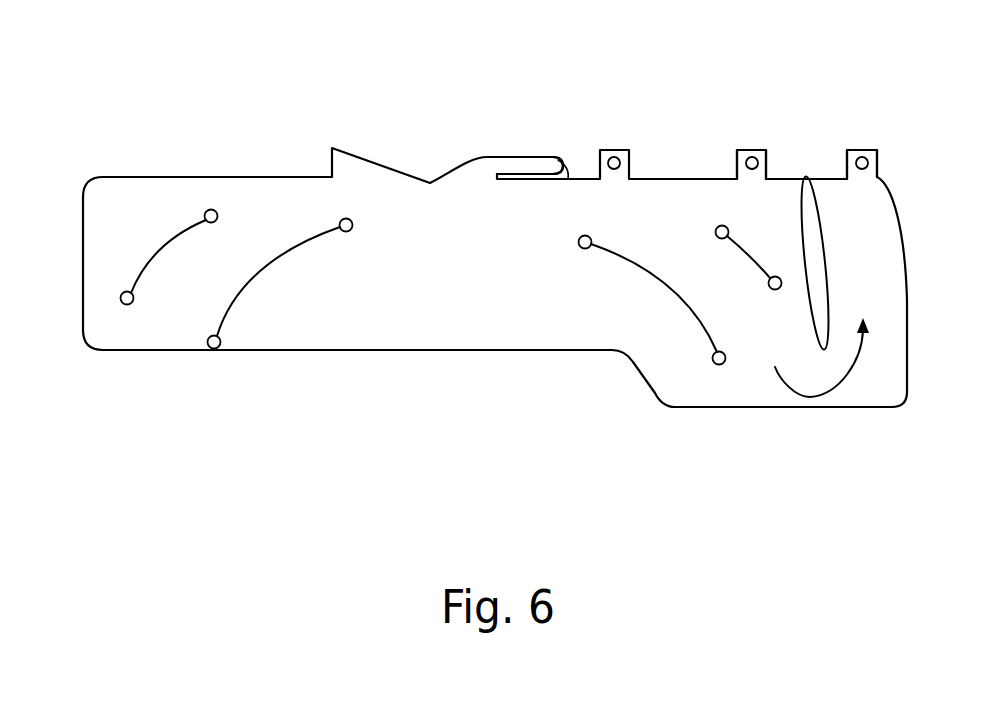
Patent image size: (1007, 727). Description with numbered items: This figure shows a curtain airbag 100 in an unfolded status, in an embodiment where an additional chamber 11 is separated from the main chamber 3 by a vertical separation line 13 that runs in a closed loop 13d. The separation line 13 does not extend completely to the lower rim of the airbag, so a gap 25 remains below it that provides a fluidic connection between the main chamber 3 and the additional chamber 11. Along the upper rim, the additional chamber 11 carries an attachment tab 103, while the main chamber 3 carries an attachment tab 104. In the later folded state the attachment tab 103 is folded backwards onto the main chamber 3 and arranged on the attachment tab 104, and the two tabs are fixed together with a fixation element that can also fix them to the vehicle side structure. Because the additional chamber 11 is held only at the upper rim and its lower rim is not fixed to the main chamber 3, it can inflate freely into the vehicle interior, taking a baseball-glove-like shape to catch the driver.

The curtain airbag 100 is at (544, 269).
The additional chamber 11 is at (880, 245).
The main chamber 3 is at (578, 198).
The attachment tab of the main chamber 104 is at (747, 150).
The attachment tab of the additional chamber 103 is at (870, 155).
The separation line 13 is at (853, 216).
The closed loop 13d is at (805, 243).
The gap 25 is at (830, 393).